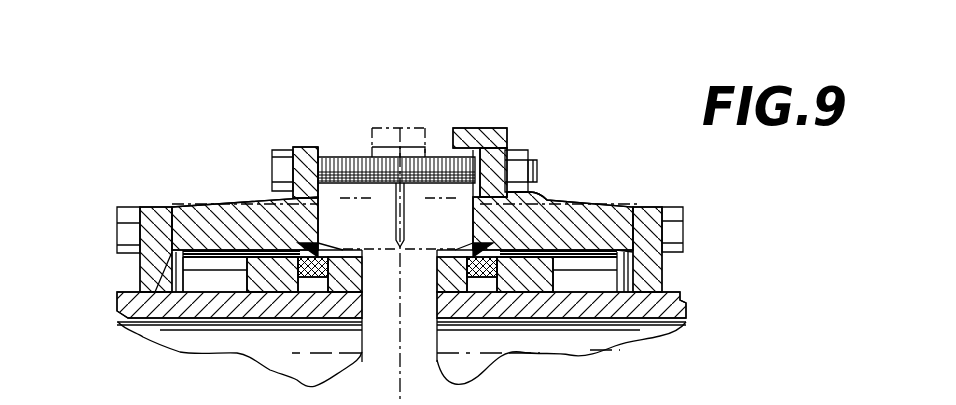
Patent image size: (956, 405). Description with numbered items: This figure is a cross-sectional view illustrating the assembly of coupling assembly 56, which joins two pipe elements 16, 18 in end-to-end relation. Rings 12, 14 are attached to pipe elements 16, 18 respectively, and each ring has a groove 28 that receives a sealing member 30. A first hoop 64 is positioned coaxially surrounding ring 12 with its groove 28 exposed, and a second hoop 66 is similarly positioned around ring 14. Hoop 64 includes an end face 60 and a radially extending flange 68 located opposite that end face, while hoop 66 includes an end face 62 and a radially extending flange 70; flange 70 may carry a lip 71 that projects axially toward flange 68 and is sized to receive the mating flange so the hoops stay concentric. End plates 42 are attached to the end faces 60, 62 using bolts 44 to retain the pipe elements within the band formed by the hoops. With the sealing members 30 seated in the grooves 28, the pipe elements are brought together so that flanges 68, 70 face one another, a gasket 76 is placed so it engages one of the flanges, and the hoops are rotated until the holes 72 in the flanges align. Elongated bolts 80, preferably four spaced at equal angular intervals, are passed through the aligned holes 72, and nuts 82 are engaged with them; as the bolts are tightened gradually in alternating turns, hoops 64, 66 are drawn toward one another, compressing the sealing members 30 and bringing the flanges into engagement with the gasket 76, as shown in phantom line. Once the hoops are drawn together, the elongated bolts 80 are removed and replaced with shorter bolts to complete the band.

The ring 12 is at (272, 291).
The ring 14 is at (547, 293).
The pipe element 16 is at (165, 300).
The pipe element 18 is at (678, 305).
The groove 28 is at (337, 247).
The sealing member 30 is at (468, 248).
The end plate 42 is at (139, 268).
The fastener 44 is at (117, 233).
The coupling assembly 56 is at (641, 90).
The end face 60 is at (163, 207).
The end face 62 is at (622, 207).
The first hoop 64 is at (200, 207).
The second hoop 66 is at (585, 201).
The flange 68 is at (311, 148).
The flange 70 is at (498, 128).
The lip 71 is at (457, 128).
The hole 72 is at (295, 150).
The gasket 76 is at (556, 203).
The elongated bolt 80 is at (353, 157).
The nut 82 is at (539, 172).